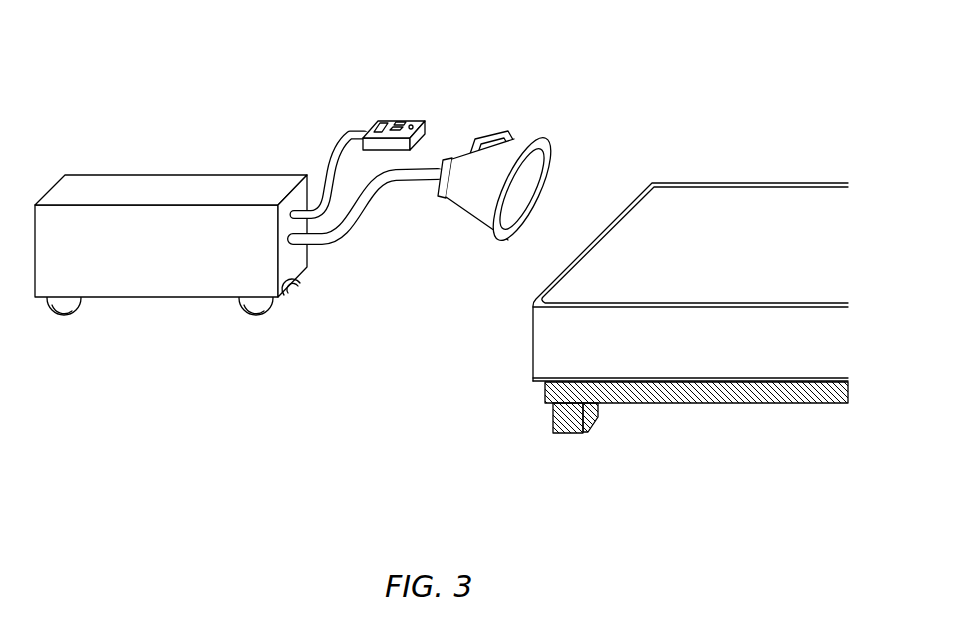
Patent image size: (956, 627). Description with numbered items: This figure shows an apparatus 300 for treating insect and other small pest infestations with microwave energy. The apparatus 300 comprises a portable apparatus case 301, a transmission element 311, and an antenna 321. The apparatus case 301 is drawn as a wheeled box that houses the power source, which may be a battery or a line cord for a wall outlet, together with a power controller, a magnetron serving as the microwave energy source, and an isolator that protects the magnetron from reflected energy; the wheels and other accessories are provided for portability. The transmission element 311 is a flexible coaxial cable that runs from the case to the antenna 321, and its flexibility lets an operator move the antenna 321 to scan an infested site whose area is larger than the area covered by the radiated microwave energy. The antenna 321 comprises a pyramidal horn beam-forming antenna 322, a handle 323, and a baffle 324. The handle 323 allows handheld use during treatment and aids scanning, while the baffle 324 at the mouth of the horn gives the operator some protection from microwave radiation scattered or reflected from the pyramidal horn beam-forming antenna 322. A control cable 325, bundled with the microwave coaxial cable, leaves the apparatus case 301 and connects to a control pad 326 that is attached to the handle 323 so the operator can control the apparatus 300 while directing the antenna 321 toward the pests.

The apparatus 300 is at (142, 88).
The apparatus case 301 is at (105, 275).
The transmission element 311 is at (387, 179).
The antenna 321 is at (480, 194).
The pyramidal horn beam-forming antenna 322 is at (478, 200).
The handle 323 is at (497, 137).
The baffle 324 is at (539, 148).
The control cable 325 is at (332, 158).
The control pad 326 is at (388, 118).